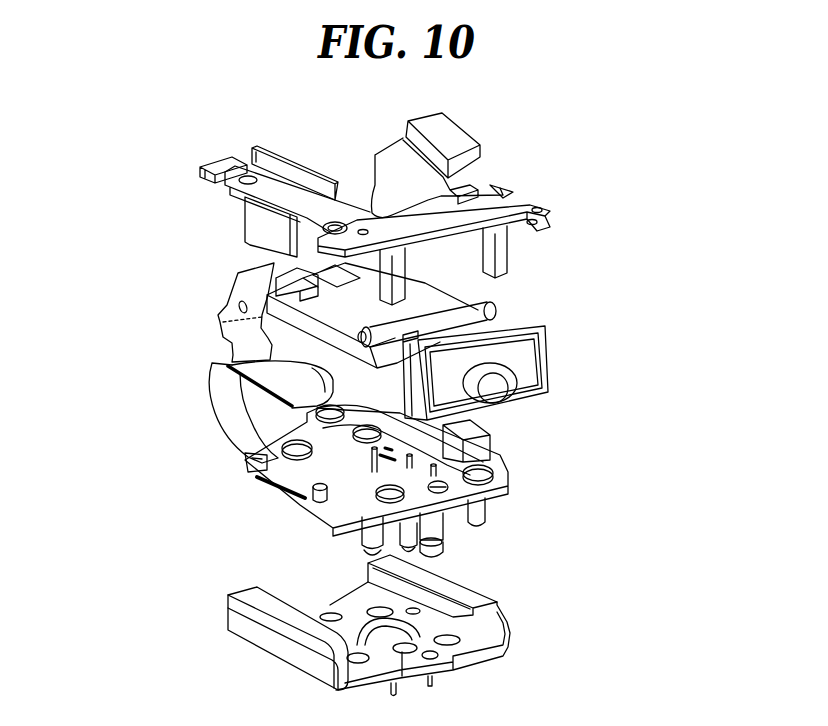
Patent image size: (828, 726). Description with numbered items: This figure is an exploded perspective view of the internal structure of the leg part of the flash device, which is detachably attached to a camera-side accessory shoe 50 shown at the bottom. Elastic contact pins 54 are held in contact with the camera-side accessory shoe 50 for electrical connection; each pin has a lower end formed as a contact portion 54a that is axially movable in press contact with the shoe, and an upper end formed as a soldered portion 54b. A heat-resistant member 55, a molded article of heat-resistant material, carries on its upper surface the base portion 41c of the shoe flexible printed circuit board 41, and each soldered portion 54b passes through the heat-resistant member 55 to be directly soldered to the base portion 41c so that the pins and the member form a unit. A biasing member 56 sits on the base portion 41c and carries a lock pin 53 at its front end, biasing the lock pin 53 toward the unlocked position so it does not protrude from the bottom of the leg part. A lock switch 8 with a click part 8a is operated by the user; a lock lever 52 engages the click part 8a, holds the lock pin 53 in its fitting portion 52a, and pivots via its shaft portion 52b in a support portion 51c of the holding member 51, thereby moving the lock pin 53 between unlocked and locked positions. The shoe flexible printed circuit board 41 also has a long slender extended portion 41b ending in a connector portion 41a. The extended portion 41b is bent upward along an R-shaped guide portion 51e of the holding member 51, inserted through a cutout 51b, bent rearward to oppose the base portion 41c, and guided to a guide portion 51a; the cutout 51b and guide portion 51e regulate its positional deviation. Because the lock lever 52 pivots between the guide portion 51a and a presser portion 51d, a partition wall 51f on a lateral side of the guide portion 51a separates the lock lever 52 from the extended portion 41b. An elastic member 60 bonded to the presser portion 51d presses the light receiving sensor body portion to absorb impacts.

The lock switch 8 is at (530, 368).
The click part 8a is at (500, 337).
The shoe flexible printed circuit board 41 is at (223, 400).
The connector portion 41a is at (227, 311).
The extended portion 41b is at (250, 373).
The base portion 41c is at (283, 468).
The camera-side accessory shoe 50 is at (240, 603).
The holding member 51 is at (472, 212).
The guide portion 51a is at (287, 193).
The cutout 51b is at (226, 170).
The support portion 51c is at (503, 193).
The presser portion 51d is at (503, 196).
The guide portion 51e is at (258, 235).
The partition wall 51f is at (275, 157).
The lock lever 52 is at (478, 310).
The fitting portion 52a is at (277, 264).
The shaft portion 52b is at (467, 308).
The lock pin 53 is at (318, 409).
The contact pins 54 is at (443, 523).
The contact portion 54a is at (437, 545).
The soldered portion 54b is at (432, 476).
The heat-resistant member 55 is at (263, 482).
The biasing member 56 is at (457, 453).
The elastic member 60 is at (453, 133).